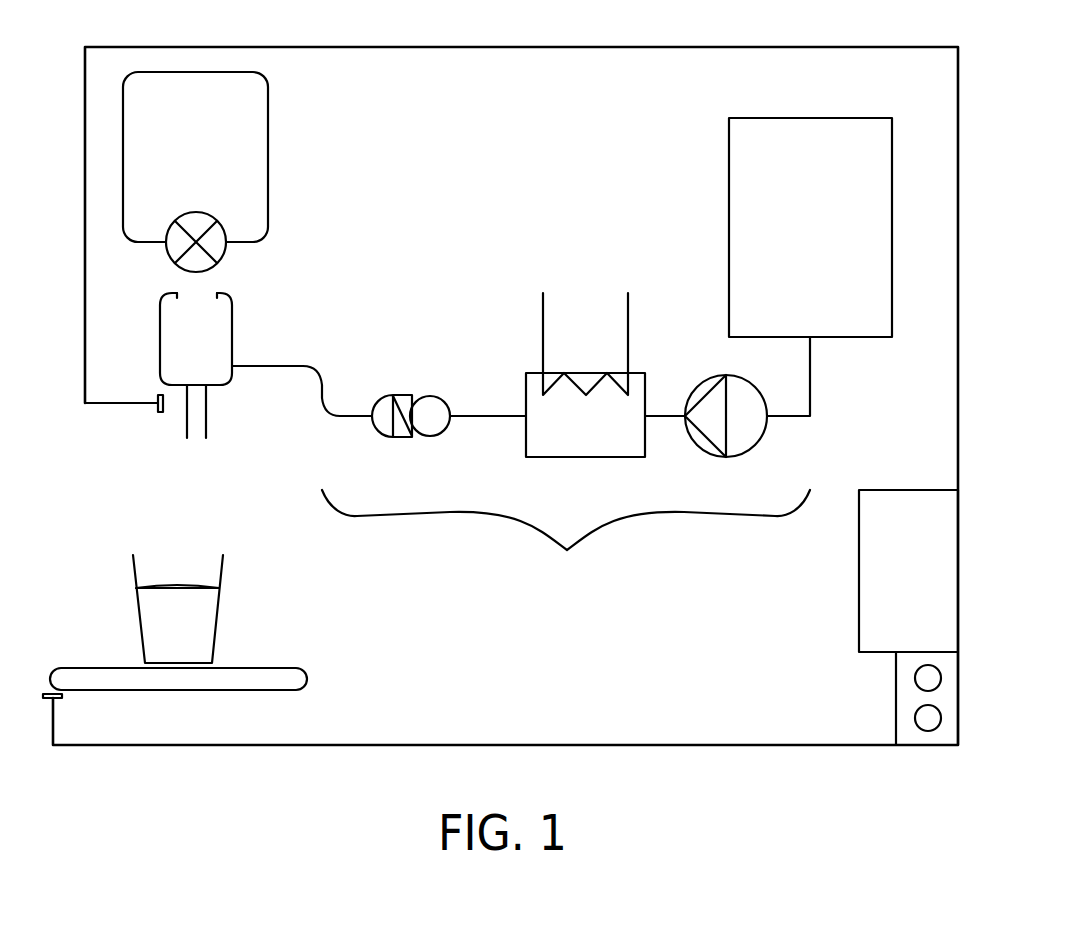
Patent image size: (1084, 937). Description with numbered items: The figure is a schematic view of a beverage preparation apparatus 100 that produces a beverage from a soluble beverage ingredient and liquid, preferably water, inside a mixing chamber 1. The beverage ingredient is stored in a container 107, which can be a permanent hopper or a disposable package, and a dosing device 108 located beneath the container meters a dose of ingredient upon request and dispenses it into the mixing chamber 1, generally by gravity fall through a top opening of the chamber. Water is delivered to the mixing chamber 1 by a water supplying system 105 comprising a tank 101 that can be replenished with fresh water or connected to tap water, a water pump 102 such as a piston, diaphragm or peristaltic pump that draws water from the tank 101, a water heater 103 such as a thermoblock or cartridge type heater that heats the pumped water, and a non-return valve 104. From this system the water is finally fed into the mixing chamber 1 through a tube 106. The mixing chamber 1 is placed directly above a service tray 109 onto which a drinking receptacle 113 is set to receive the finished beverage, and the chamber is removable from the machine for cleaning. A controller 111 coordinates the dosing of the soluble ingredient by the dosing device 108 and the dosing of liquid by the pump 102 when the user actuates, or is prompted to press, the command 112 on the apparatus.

The beverage preparation apparatus 100 is at (895, 47).
The mixing chamber 1 is at (232, 340).
The tank 101 is at (729, 227).
The water pump 102 is at (767, 432).
The water heater 103 is at (587, 457).
The non-return valve 104 is at (403, 395).
The water supplying system 105 is at (566, 534).
The tube 106 is at (268, 366).
The container 107 is at (270, 157).
The dosing device 108 is at (227, 248).
The service tray 109 is at (307, 678).
The controller 111 is at (859, 570).
The command 112 is at (896, 700).
The drinking receptacle 113 is at (137, 615).